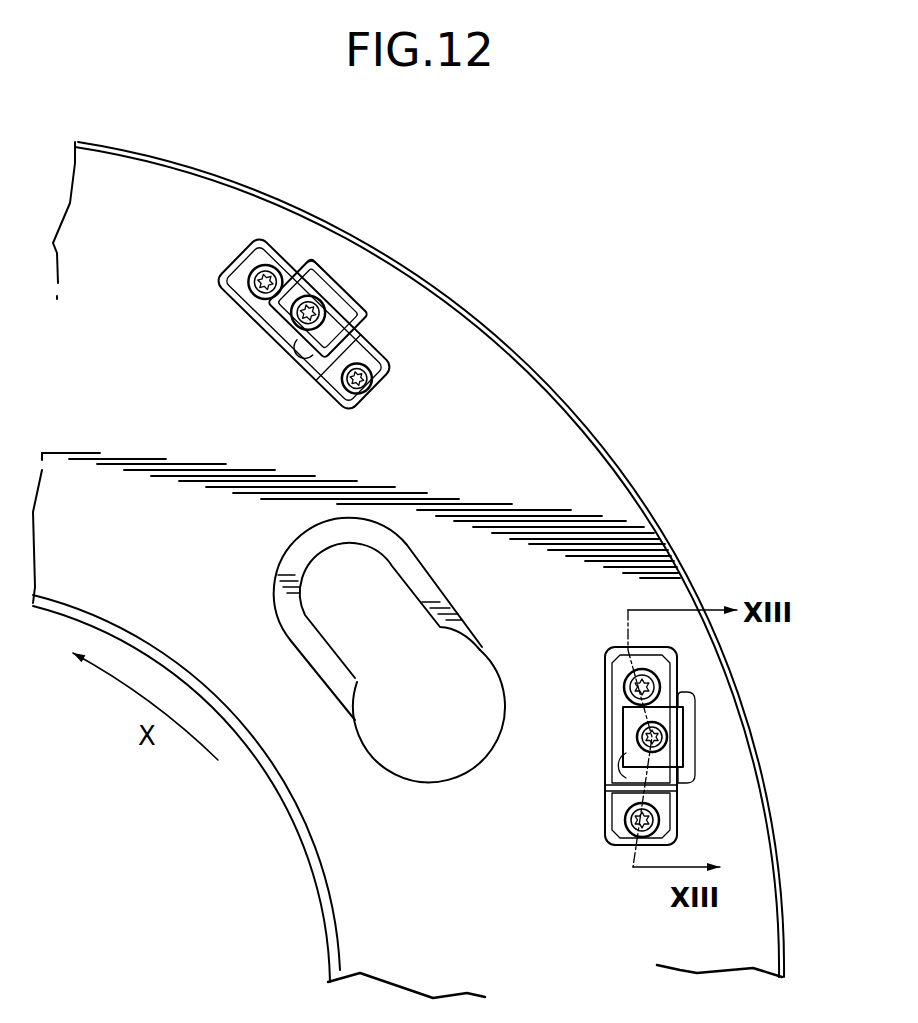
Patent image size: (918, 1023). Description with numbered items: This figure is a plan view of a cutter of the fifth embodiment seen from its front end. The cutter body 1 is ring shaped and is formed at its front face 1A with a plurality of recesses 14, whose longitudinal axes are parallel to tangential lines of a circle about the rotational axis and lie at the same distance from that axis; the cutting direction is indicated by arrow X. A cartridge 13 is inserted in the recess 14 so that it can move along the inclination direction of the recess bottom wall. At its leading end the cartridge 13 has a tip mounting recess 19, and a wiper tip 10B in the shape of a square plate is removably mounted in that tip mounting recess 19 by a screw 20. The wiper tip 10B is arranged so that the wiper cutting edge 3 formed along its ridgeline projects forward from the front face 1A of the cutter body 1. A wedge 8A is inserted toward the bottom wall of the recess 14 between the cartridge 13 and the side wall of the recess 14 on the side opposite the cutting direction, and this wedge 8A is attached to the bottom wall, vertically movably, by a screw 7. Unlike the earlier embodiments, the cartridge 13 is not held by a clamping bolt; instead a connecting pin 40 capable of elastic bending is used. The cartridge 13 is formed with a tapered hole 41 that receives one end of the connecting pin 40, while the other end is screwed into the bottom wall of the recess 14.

The cutter body 1 is at (535, 365).
The front face 1A is at (572, 423).
The wiper cutting edge 3 is at (282, 290).
The screw 7 is at (360, 400).
The wedge 8A is at (367, 338).
The wiper tip 10B is at (323, 293).
The cartridge 13 is at (238, 293).
The recess 14 is at (258, 237).
The tip mounting recess 19 is at (290, 343).
The screw 20 is at (326, 310).
The connecting pin 40 is at (258, 326).
The tapered hole 41 is at (296, 263).